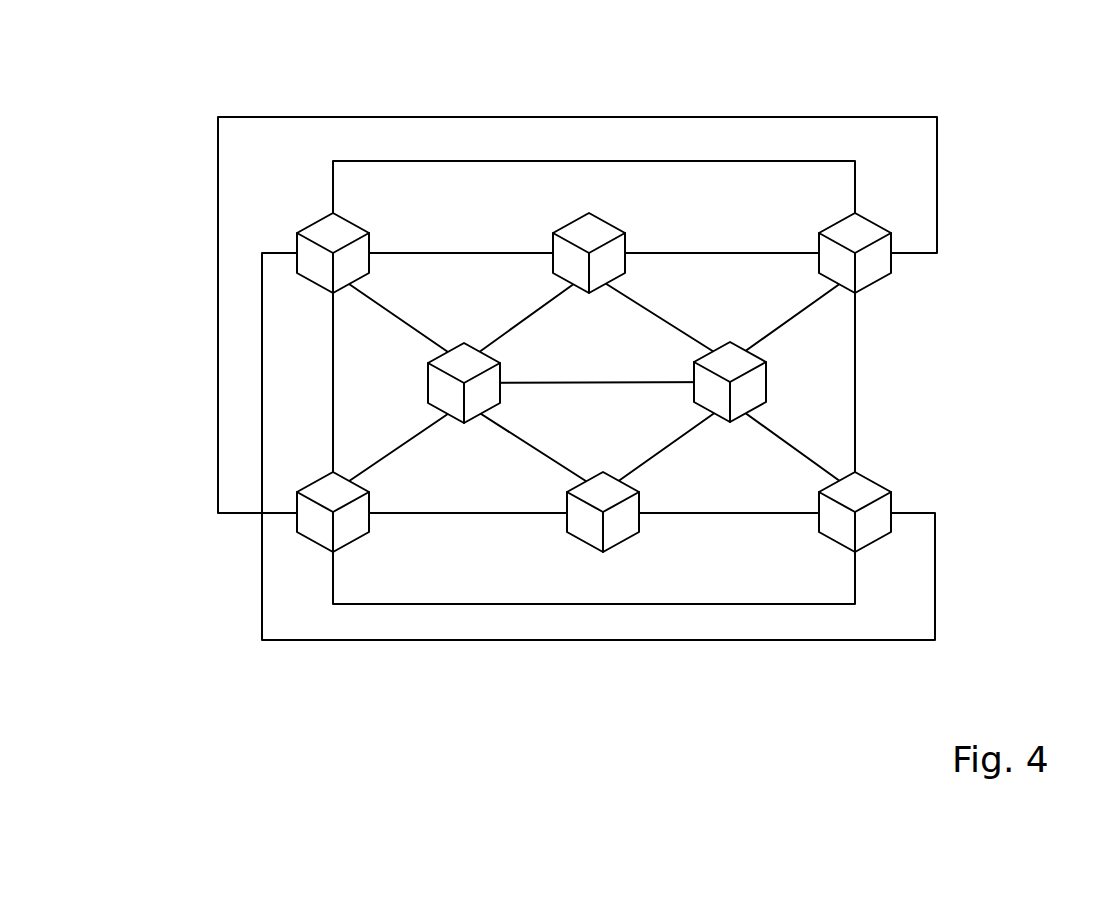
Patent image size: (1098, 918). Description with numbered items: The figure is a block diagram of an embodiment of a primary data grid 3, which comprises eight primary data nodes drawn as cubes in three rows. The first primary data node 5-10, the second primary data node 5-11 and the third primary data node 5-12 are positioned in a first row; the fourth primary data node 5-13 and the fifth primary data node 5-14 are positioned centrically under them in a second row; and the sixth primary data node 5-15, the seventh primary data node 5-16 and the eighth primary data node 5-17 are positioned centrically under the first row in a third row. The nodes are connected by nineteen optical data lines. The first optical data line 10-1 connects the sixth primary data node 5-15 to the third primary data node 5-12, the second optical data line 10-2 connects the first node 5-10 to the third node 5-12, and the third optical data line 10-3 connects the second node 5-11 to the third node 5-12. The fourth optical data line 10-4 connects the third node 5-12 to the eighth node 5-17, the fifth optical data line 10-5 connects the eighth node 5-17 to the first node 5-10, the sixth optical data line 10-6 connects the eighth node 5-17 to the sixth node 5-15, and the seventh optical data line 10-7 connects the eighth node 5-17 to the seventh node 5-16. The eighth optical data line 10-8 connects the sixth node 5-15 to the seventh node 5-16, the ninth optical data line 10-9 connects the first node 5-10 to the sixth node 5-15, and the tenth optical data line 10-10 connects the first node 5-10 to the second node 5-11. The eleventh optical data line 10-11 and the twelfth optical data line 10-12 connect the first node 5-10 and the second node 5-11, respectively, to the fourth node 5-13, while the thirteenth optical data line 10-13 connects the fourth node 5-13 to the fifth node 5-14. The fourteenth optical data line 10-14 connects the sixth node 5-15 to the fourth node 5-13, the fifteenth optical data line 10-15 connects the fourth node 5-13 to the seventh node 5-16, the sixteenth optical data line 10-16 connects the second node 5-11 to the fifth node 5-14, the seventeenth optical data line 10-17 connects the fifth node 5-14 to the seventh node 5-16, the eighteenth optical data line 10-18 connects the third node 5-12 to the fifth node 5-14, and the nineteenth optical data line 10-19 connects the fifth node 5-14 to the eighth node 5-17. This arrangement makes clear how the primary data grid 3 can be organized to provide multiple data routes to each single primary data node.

The primary data grid 3 is at (845, 77).
The first optical data line 10-1 is at (232, 117).
The second optical data line 10-2 is at (387, 161).
The third optical data line 10-3 is at (712, 255).
The fourth optical data line 10-4 is at (858, 342).
The fifth optical data line 10-5 is at (933, 605).
The sixth optical data line 10-6 is at (840, 607).
The seventh optical data line 10-7 is at (697, 518).
The eighth optical data line 10-8 is at (447, 510).
The ninth optical data line 10-9 is at (332, 385).
The tenth optical data line 10-10 is at (470, 252).
The eleventh optical data line 10-11 is at (373, 298).
The twelfth optical data line 10-12 is at (530, 315).
The thirteenth optical data line 10-13 is at (603, 352).
The fourteenth optical data line 10-14 is at (435, 423).
The fifteenth optical data line 10-15 is at (597, 437).
The sixteenth optical data line 10-16 is at (712, 300).
The seventeenth optical data line 10-17 is at (678, 437).
The eighteenth optical data line 10-18 is at (807, 310).
The nineteenth optical data line 10-19 is at (757, 423).
The first primary data node 5-10 is at (312, 225).
The second primary data node 5-11 is at (573, 218).
The third primary data node 5-12 is at (837, 220).
The fourth primary data node 5-13 is at (430, 380).
The fifth primary data node 5-14 is at (767, 402).
The sixth primary data node 5-15 is at (315, 542).
The seventh primary data node 5-16 is at (585, 533).
The eighth primary data node 5-17 is at (837, 540).